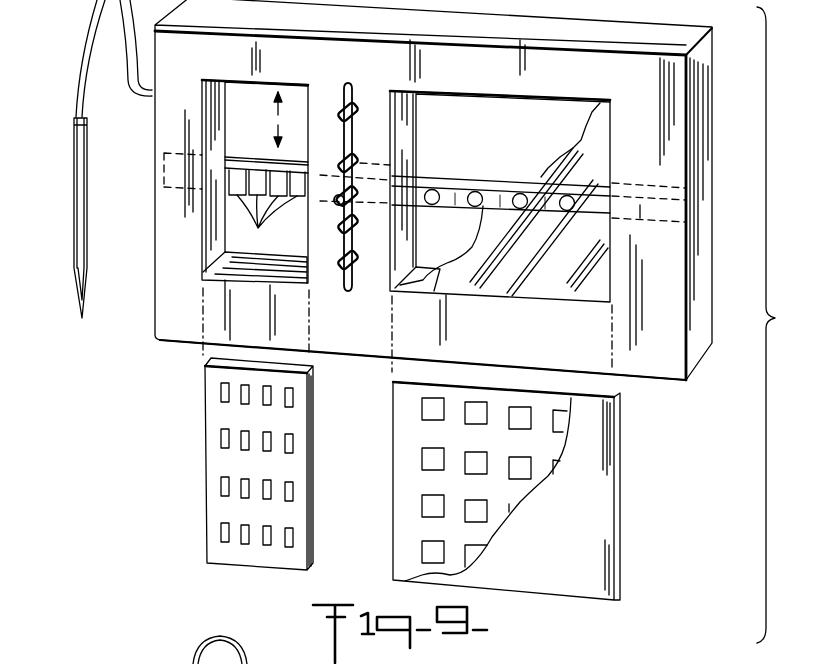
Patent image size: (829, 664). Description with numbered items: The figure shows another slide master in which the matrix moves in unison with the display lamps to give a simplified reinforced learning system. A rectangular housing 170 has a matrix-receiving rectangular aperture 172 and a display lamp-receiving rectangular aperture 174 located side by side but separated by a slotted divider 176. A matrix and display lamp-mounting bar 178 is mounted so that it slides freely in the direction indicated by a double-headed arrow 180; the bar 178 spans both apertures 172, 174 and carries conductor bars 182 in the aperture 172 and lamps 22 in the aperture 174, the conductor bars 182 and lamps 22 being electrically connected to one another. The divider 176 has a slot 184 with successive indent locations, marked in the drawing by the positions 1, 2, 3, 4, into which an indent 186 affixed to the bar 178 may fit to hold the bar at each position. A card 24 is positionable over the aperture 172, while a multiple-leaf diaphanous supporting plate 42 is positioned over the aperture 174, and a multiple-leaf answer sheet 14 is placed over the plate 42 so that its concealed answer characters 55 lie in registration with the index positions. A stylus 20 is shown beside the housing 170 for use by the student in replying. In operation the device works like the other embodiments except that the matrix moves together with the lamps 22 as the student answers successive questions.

The rectangular housing 170 is at (425, 21).
The matrix-receiving rectangular aperture 172 is at (235, 105).
The double-headed arrow 180 is at (277, 120).
The conductor bars 182 is at (267, 211).
The slot 184 is at (357, 250).
The indent 186 is at (352, 190).
The question 1 is at (341, 113).
The question 2 is at (339, 163).
The lever position 3 is at (340, 224).
The lever position 4 is at (339, 263).
The slotted divider 176 is at (382, 138).
The display lamp-receiving rectangular aperture 174 is at (548, 136).
The matrix and display lamp-mounting bar 178 is at (424, 174).
The lamps 22 is at (433, 204).
The multiple-leaf diaphanous supporting plate 42 is at (555, 288).
The stylus pen 20 is at (77, 200).
The card 24 is at (206, 375).
The multiple-leaf answer sheet 14 is at (408, 392).
The answer characters 55 is at (432, 452).